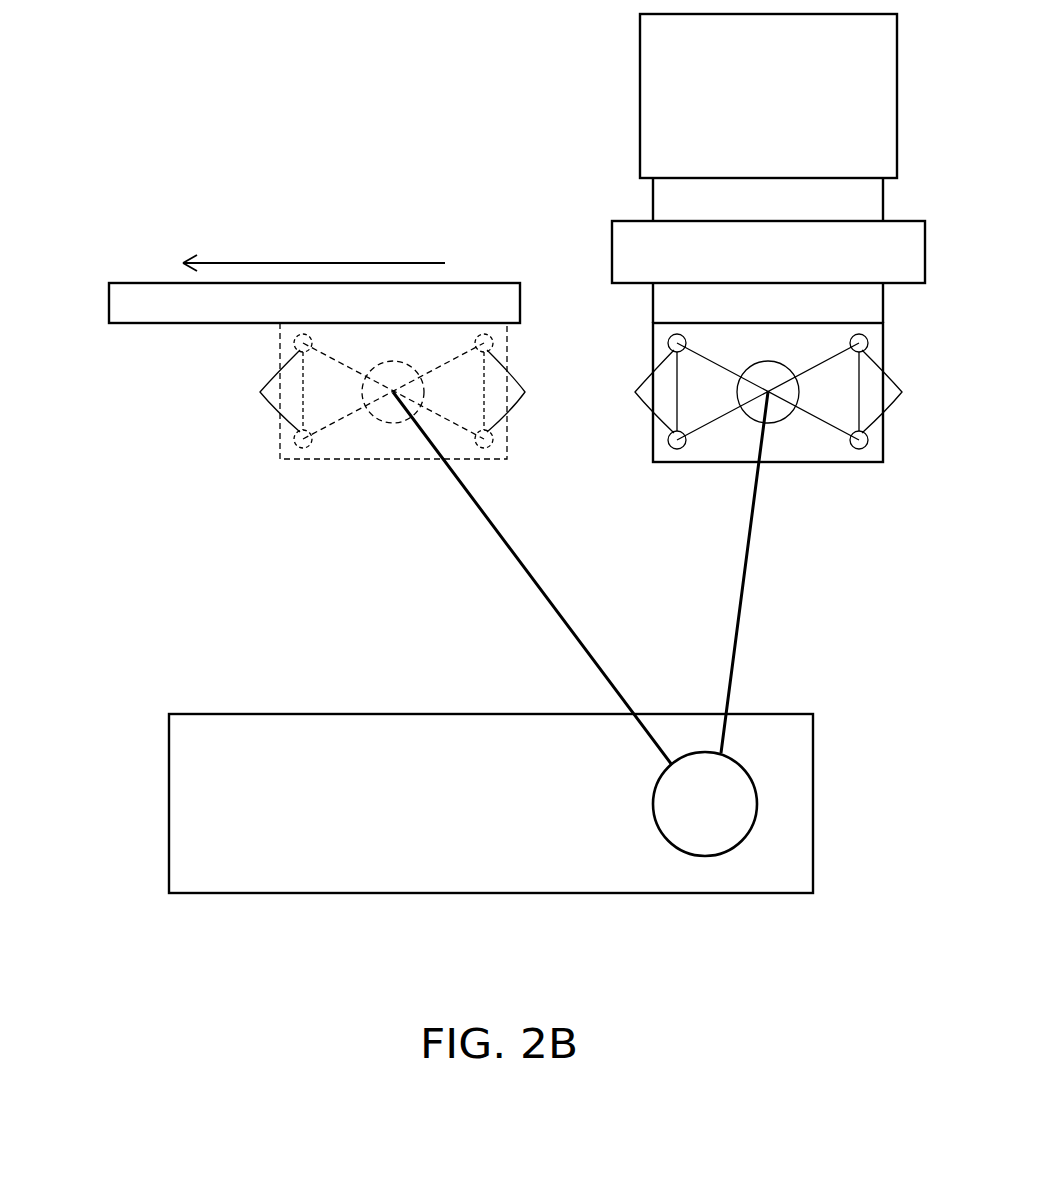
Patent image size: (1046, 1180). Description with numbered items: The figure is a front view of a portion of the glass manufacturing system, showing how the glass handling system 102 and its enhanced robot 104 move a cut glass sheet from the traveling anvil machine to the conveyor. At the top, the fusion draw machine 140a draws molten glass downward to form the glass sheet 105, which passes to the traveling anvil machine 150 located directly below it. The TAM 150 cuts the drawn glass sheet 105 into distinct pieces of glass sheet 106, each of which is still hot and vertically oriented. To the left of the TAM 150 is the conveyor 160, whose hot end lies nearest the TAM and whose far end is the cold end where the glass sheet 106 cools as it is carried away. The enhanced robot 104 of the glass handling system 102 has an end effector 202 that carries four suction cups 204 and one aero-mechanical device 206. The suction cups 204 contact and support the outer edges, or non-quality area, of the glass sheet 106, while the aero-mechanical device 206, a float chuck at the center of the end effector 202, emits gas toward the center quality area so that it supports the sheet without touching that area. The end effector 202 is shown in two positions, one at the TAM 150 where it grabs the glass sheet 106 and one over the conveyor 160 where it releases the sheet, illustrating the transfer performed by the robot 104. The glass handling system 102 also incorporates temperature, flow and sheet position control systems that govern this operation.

The glass handling system 102 is at (266, 713).
The enhanced robot 104 is at (723, 853).
The glass sheet 105 is at (653, 200).
The glass sheet 106 is at (393, 461).
The fusion draw machine (FDM) 140a is at (897, 96).
The traveling anvil machine (TAM) 150 is at (612, 251).
The conveyor 160 is at (109, 302).
The end effector 202 is at (330, 425).
The suction cups 204 is at (581, 391).
The aero-mechanical device 206 is at (395, 361).